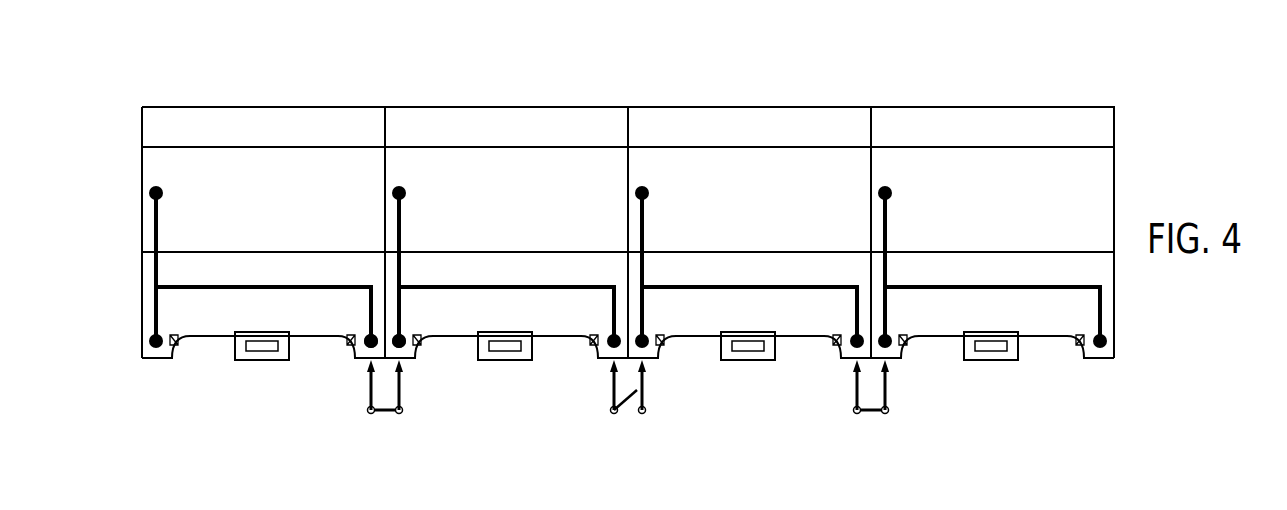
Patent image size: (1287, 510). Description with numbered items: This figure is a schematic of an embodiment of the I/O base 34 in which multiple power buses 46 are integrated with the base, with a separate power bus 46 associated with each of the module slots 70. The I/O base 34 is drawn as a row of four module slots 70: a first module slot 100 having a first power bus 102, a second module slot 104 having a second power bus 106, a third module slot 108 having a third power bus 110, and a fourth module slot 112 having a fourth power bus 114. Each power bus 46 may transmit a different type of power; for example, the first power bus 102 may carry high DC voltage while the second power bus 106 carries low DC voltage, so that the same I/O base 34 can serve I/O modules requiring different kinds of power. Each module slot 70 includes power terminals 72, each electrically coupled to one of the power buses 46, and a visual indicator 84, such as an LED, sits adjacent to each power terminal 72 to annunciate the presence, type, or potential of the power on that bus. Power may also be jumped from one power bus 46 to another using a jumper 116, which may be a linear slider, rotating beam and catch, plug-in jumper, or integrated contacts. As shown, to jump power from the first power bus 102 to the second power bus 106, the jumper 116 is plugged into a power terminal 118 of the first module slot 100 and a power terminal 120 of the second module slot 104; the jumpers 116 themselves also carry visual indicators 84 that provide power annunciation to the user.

The I/O base 34 is at (200, 67).
The module slots 70 is at (287, 100).
The power buses 46 is at (313, 274).
The power terminals 72 is at (144, 366).
The visual indicator 84 is at (174, 331).
The first module slot 100 is at (218, 347).
The first power bus 102 is at (263, 284).
The second module slot 104 is at (460, 347).
The second power bus 106 is at (508, 284).
The third module slot 108 is at (796, 347).
The third power bus 110 is at (753, 284).
The fourth module slot 112 is at (948, 347).
The fourth power bus 114 is at (993, 284).
The jumper 116 is at (386, 420).
The power terminal 118 is at (373, 333).
The power terminal 120 is at (398, 333).